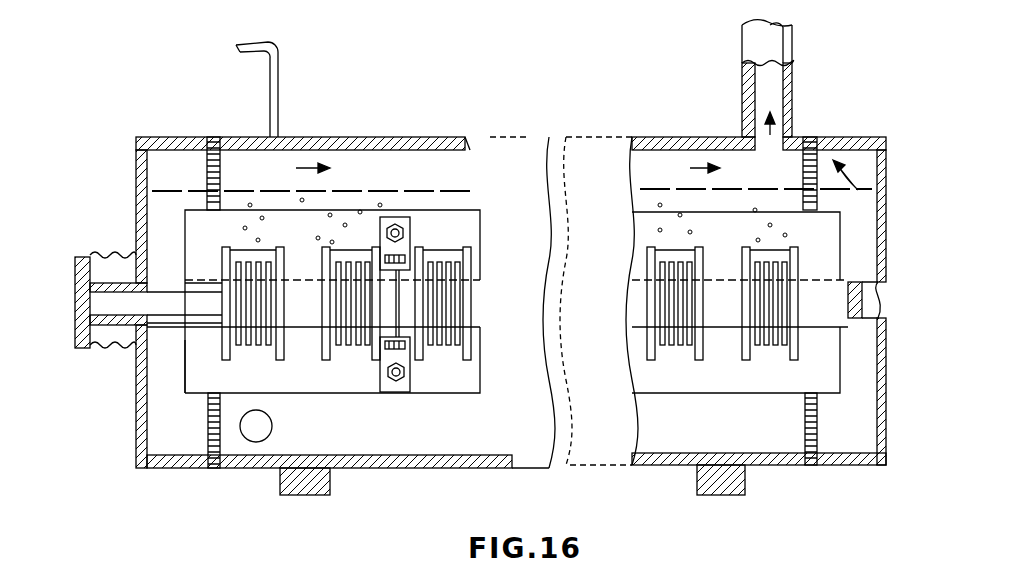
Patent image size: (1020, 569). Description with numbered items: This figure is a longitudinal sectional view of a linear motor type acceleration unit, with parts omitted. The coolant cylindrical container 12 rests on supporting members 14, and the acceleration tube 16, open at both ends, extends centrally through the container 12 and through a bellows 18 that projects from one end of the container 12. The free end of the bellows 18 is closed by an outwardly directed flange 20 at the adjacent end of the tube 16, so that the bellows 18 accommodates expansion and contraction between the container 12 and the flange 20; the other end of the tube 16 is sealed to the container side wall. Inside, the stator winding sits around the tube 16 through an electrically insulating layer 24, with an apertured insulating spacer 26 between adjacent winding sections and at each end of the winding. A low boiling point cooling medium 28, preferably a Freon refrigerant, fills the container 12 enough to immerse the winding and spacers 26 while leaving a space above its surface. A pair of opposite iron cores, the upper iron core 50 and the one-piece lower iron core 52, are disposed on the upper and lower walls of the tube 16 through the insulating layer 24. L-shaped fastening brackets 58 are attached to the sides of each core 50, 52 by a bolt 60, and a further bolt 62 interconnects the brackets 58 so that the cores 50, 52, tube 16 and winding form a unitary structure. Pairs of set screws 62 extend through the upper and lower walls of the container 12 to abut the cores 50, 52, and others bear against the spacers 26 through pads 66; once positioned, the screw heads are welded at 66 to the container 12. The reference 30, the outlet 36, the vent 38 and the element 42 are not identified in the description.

The coolant cylindrical container 12 is at (348, 138).
The supporting members 14 is at (745, 482).
The acceleration tube 16 is at (80, 300).
The bellows 18 is at (120, 257).
The flange 20 is at (80, 266).
The electrically insulating layer 24 is at (200, 276).
The apertured spacer 26 is at (228, 362).
The cooling medium 28 is at (388, 188).
The chamber 30 is at (196, 246).
The outlet pipe 36 is at (795, 63).
The vent pipe 38 is at (284, 76).
The electrode plates 42 is at (253, 350).
The upper iron core 50 is at (880, 246).
The lower iron core 52 is at (185, 353).
The fastening brackets 58 is at (414, 372).
The bolt 60 is at (405, 226).
The set screws 62 is at (204, 192).
The pads 66 is at (213, 136).